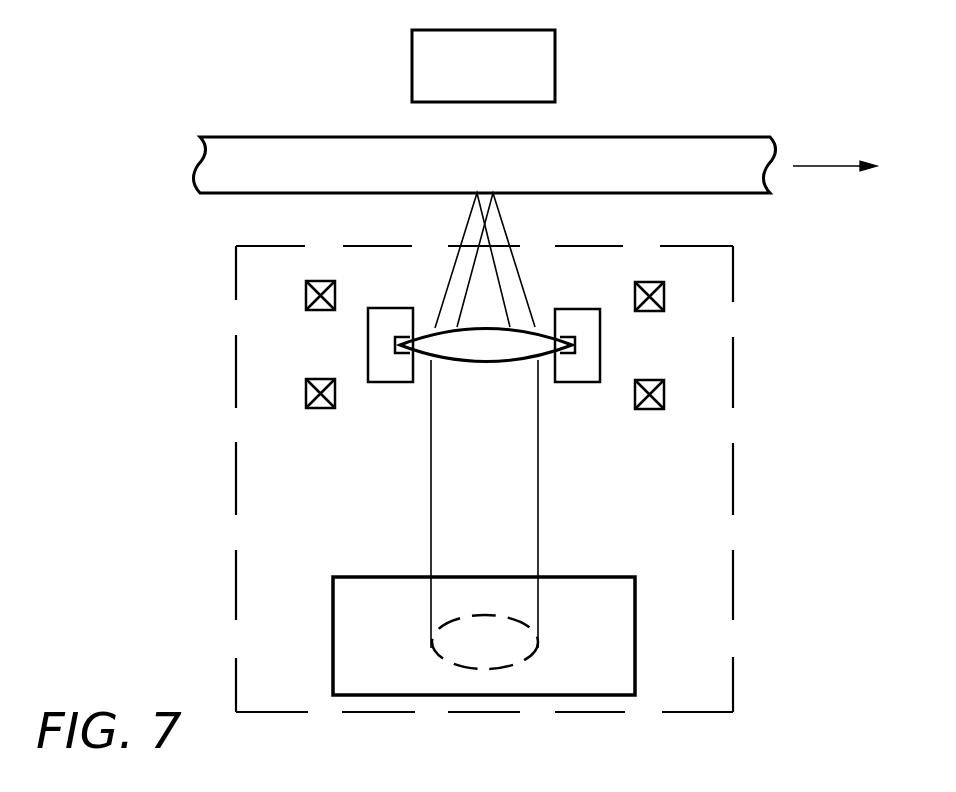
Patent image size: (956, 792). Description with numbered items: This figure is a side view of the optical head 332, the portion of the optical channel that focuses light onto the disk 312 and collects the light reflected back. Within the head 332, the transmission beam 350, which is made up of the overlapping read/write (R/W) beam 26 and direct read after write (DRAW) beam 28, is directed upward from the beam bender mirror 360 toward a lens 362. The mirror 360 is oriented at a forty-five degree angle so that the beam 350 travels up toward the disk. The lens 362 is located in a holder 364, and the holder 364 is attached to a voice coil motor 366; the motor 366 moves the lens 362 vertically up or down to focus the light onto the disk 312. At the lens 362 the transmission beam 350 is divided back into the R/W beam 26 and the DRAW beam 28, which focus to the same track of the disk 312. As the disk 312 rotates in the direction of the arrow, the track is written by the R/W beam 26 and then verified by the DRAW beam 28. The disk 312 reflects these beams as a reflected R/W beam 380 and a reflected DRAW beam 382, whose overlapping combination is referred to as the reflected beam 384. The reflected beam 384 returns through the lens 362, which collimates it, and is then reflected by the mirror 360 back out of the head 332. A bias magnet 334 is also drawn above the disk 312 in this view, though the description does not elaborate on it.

The disk 312 is at (696, 137).
The bias magnet 334 is at (412, 56).
The optical head 332 is at (236, 258).
The voice coil motor 366 is at (305, 300).
The holder 364 is at (412, 308).
The lens 362 is at (428, 365).
The read/write (R/W) beam 26 is at (467, 220).
The direct read after write (DRAW) beam 28 is at (503, 220).
The reflected R/W beam 380 is at (464, 236).
The reflected DRAW beam 382 is at (506, 236).
The transmission beam 350 is at (538, 505).
The reflected beam 384 is at (431, 525).
The beam bender mirror 360 is at (635, 620).